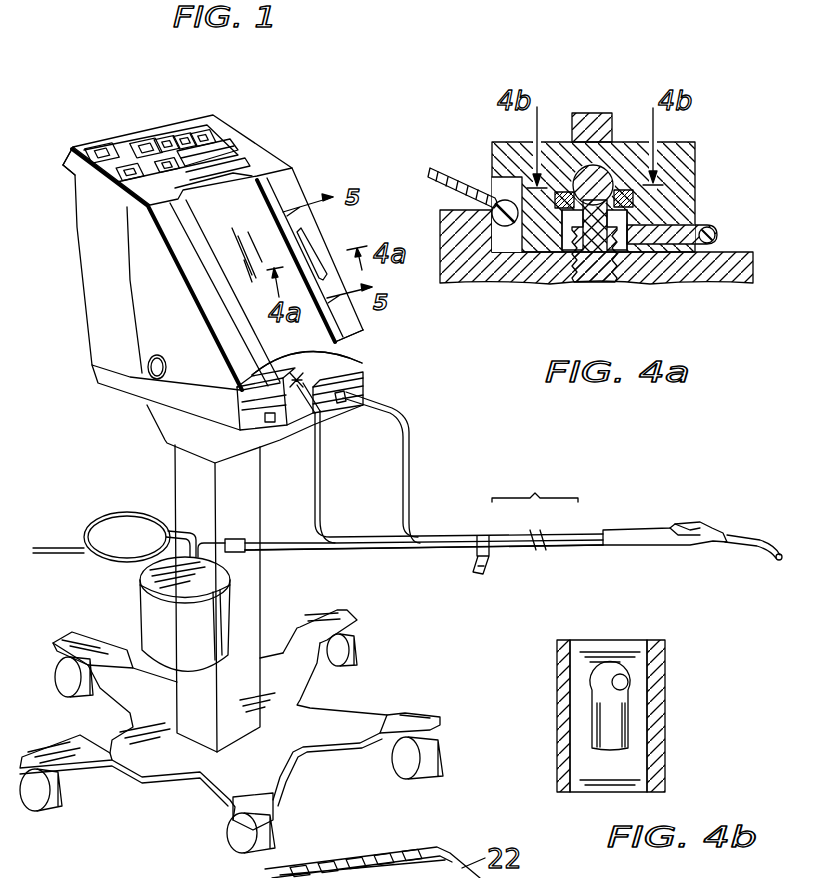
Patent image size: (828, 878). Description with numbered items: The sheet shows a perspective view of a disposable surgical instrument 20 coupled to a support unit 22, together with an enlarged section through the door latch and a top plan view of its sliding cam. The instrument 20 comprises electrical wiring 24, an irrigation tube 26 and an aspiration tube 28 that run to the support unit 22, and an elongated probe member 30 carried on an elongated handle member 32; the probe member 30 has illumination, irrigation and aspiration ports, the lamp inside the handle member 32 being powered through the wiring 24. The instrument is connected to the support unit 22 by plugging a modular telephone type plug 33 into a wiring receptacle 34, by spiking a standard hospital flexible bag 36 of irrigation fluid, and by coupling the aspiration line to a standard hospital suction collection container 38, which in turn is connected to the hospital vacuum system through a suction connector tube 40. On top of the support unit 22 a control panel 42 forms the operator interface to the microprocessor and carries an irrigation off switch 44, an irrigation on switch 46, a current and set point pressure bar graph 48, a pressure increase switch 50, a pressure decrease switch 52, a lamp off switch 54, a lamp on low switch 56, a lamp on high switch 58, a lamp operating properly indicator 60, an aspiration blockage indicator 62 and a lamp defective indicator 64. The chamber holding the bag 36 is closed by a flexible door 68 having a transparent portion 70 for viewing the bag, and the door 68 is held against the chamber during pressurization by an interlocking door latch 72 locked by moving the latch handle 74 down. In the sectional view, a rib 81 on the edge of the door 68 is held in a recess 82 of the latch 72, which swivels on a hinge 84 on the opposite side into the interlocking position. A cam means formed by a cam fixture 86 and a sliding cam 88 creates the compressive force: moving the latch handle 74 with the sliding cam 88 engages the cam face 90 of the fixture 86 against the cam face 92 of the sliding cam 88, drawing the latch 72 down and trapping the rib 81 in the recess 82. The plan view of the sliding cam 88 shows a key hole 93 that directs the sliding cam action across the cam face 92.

In FIG. 1, the surgical instrument 20 is at (682, 477).
In FIG. 1, the support unit 22 is at (117, 427).
In FIG. 1, the electrical wiring 24 is at (407, 508).
In FIG. 1, the irrigation tube 26 is at (320, 517).
In FIG. 1, the aspiration tube 28 is at (315, 552).
In FIG. 1, the probe member 30 is at (763, 547).
In FIG. 1, the handle member 32 is at (652, 545).
In FIG. 1, the modular telephone type plug 33 is at (341, 402).
In FIG. 1, the wiring receptacle 34 is at (348, 397).
In FIG. 1, the flexible bag 36 is at (303, 360).
In FIG. 1, the suction collection container 38 is at (150, 628).
In FIG. 1, the suction connector tube 40 is at (53, 548).
In FIG. 1, the control panel 42 is at (130, 196).
In FIG. 1, the irrigation off switch 44 is at (77, 184).
In FIG. 1, the irrigation on switch 46 is at (104, 150).
In FIG. 1, the current and set point pressure bar graph 48 is at (123, 152).
In FIG. 1, the pressure increase switch 50 is at (146, 143).
In FIG. 1, the pressure decrease switch 52 is at (190, 200).
In FIG. 1, the lamp off switch 54 is at (168, 139).
In FIG. 1, the lamp on low switch 56 is at (181, 137).
In FIG. 1, the lamp on high switch 58 is at (193, 128).
In FIG. 1, the lamp operating properly indicator 60 is at (218, 152).
In FIG. 1, the aspiration blockage indicator 62 is at (187, 168).
In FIG. 1, the lamp defective indicator 64 is at (233, 181).
In FIG. 1, the door 68 is at (205, 254).
In FIG. 4a, the door 68 is at (428, 170).
In FIG. 1, the transparent portion 70 is at (138, 310).
In FIG. 1, the interlocking door latch 72 is at (357, 333).
In FIG. 4a, the interlocking door latch 72 is at (697, 168).
In FIG. 1, the latch handle 74 is at (311, 240).
In FIG. 4a, the latch handle 74 is at (597, 110).
In FIG. 4a, the rib 81 is at (495, 197).
In FIG. 4a, the recess 82 is at (510, 226).
In FIG. 4a, the hinge 84 is at (710, 240).
In FIG. 4a, the cam fixture 86 is at (567, 208).
In FIG. 4a, the sliding cam 88 is at (638, 203).
In FIG. 4b, the sliding cam 88 is at (637, 708).
In FIG. 4a, the cam face of the fixture 90 is at (633, 213).
In FIG. 4a, the cam face of the sliding cam 92 is at (601, 178).
In FIG. 4b, the cam face of the sliding cam 92 is at (627, 725).
In FIG. 4b, the key hole 93 is at (622, 690).